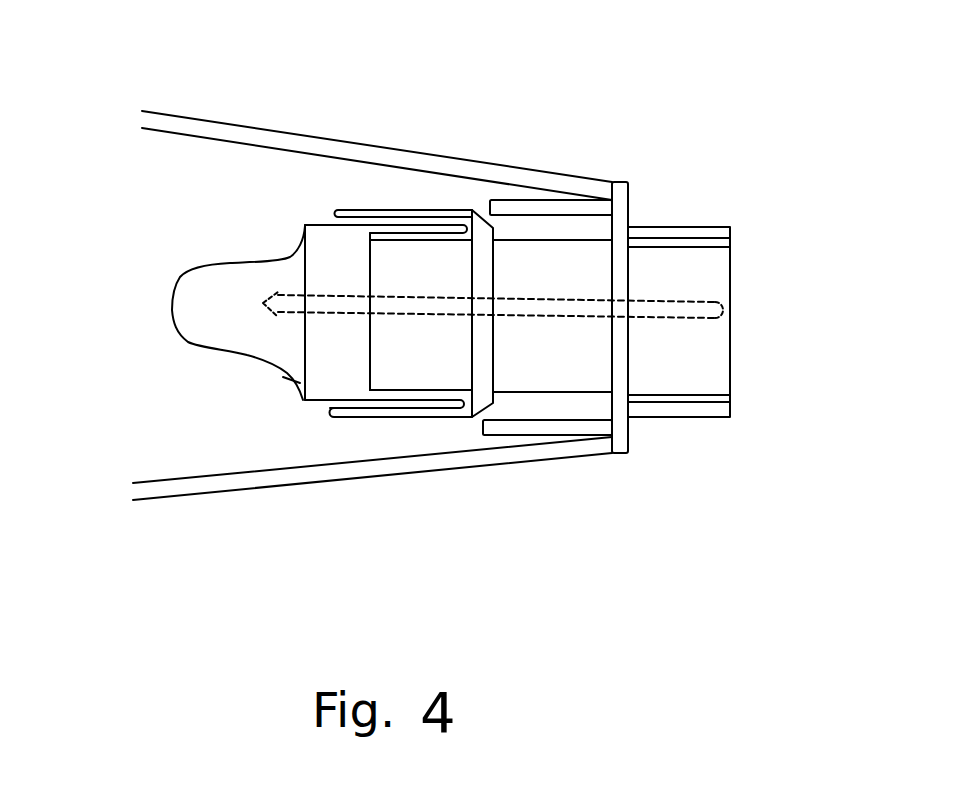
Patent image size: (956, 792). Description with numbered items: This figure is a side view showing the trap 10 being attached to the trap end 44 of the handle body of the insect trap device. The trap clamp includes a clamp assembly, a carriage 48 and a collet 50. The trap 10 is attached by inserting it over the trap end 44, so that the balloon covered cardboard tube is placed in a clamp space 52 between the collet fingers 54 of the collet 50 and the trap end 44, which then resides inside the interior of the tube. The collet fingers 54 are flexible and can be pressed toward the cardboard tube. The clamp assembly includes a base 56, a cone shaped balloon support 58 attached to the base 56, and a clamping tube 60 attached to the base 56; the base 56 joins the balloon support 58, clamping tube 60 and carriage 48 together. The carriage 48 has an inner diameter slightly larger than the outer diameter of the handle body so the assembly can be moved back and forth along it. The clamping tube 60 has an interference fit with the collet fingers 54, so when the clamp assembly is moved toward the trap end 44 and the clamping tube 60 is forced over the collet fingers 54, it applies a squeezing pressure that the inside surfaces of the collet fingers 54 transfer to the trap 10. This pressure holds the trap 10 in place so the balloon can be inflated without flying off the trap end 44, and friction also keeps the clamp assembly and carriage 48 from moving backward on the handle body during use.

The trap 10 is at (128, 430).
The trap end 44 is at (730, 258).
The carriage 48 is at (675, 227).
The collet 50 is at (483, 435).
The clamp space 52 is at (323, 408).
The collet fingers 54 is at (372, 210).
The base 56 is at (625, 182).
The cone shaped balloon support 58 is at (553, 172).
The clamping tube 60 is at (490, 200).